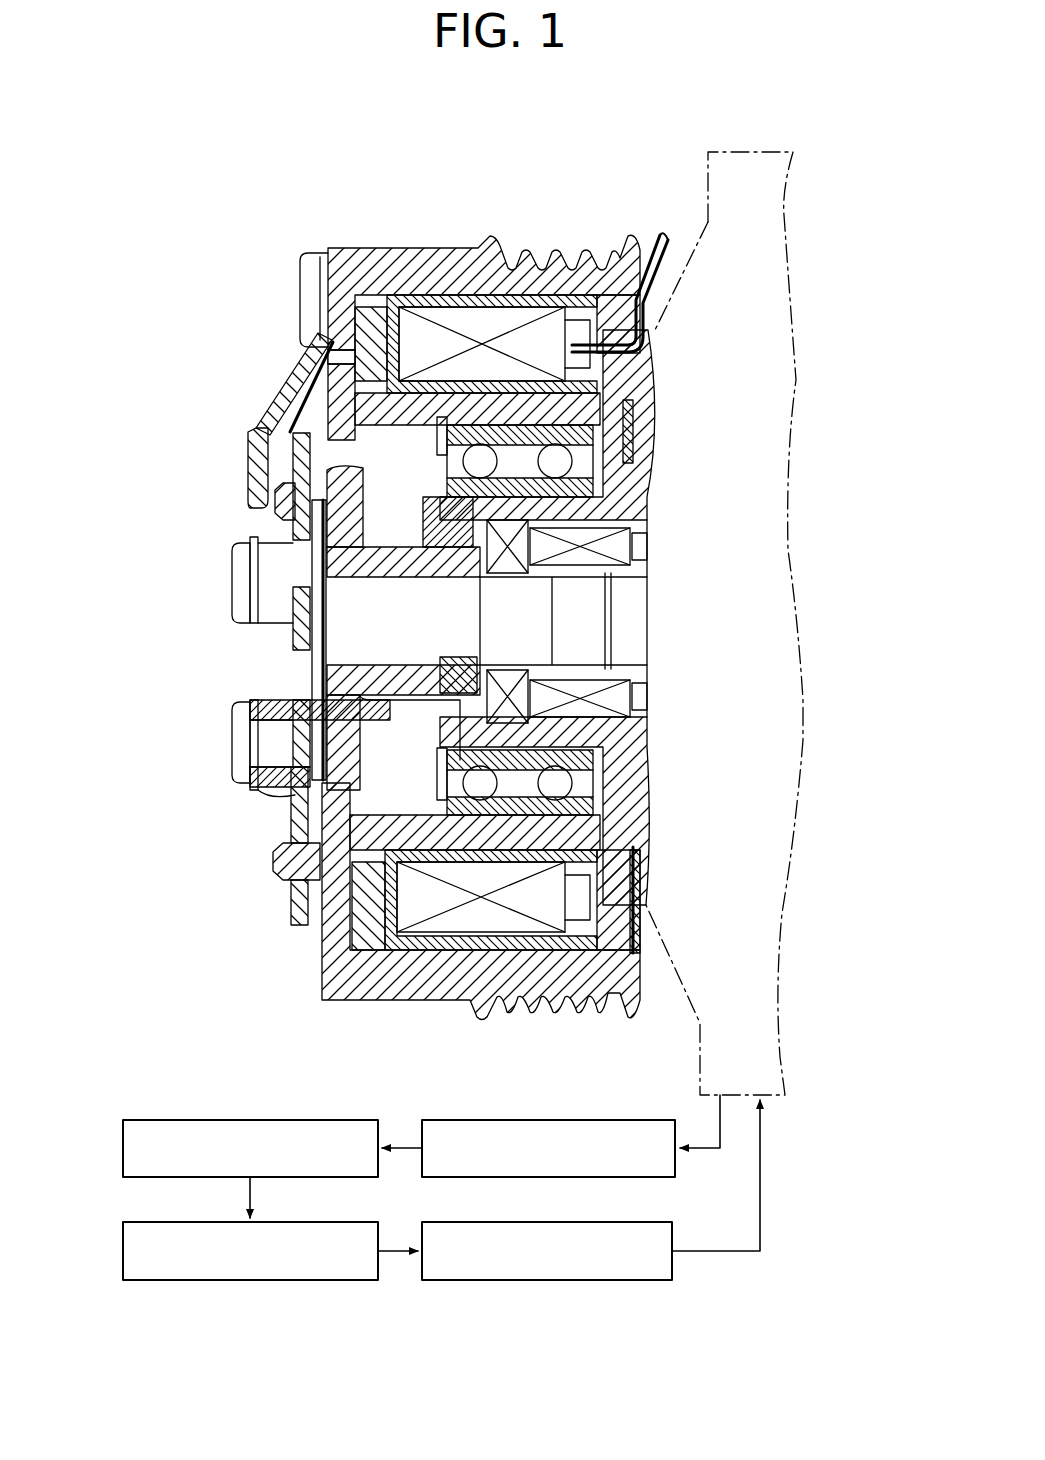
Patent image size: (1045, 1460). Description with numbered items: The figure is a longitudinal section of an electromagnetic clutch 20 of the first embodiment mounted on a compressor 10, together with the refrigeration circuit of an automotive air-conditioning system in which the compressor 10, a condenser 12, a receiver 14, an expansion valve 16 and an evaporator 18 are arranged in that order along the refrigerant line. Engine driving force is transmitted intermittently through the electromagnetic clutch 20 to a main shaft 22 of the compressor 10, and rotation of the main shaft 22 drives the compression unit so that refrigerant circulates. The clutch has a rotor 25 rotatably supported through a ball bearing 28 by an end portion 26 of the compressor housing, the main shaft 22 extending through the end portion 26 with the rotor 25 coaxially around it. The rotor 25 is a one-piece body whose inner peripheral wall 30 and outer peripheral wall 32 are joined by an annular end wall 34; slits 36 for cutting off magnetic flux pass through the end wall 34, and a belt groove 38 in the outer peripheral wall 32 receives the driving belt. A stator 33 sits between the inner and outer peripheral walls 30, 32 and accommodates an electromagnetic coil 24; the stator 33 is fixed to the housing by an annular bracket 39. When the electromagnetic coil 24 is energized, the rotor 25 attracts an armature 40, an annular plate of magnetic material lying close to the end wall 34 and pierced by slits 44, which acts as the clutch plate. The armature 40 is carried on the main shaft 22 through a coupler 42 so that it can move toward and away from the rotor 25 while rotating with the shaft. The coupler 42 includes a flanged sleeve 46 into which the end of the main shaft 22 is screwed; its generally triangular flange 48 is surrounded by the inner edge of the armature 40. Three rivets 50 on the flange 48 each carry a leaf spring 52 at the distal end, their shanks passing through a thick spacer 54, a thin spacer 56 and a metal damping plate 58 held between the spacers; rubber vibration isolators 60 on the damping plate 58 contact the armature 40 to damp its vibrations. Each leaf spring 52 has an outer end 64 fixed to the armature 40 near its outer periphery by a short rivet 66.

The compressor 10 is at (788, 222).
The condenser 12 is at (644, 1120).
The receiver 14 is at (160, 1120).
The expansion valve 16 is at (350, 1280).
The evaporator 18 is at (650, 1280).
The electromagnetic clutch 20 is at (430, 174).
The main shaft 22 is at (592, 620).
The electromagnetic coil 24 is at (449, 918).
The rotor 25 is at (467, 225).
The end portion of the housing 26 is at (552, 510).
The ball bearing 28 is at (603, 768).
The inner peripheral wall 30 is at (605, 408).
The outer peripheral wall 32 is at (401, 258).
The stator 33 is at (510, 935).
The end wall 34 is at (332, 925).
The slits 36 is at (363, 942).
The belt groove 38 is at (570, 238).
The annular bracket 39 is at (622, 890).
The armature 40 is at (347, 250).
The coupler 42 is at (212, 415).
The slits 44 is at (335, 362).
The flanged sleeve 46 is at (394, 532).
The flange 48 is at (372, 482).
The rivets 50 is at (248, 604).
The leaf spring 52 is at (283, 470).
The thick spacer 54 is at (266, 794).
The thin spacer 56 is at (292, 690).
The damping plate 58 is at (295, 820).
The vibration isolators 60 is at (285, 505).
The outer end 64 is at (322, 305).
The short rivet 66 is at (305, 278).